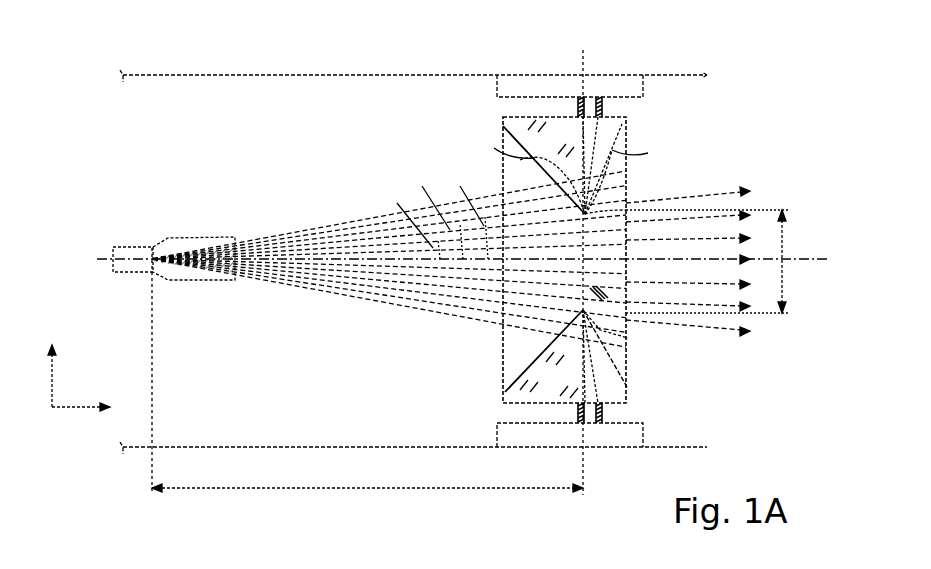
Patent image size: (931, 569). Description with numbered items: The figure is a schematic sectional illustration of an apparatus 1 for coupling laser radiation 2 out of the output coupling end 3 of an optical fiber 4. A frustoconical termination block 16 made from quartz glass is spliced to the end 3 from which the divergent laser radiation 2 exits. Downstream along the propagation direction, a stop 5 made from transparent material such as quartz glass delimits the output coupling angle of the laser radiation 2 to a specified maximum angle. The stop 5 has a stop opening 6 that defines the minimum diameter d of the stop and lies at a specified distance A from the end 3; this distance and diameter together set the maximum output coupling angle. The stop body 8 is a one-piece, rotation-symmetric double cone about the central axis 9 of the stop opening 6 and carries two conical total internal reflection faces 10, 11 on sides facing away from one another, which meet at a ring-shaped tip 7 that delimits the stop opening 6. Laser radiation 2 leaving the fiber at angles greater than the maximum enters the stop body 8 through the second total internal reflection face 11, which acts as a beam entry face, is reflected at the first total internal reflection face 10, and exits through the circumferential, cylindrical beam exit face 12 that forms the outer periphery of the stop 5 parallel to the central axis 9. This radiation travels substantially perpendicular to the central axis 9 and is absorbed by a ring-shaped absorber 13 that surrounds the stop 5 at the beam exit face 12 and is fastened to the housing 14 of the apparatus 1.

The apparatus 1 is at (656, 66).
The laser radiation 2 is at (337, 222).
The output coupling end 3 is at (163, 241).
The optical fiber 4 is at (137, 247).
The stop 5 is at (470, 394).
The stop opening 6 is at (600, 298).
The tip 7 is at (628, 206).
The stop body 8 is at (503, 372).
The central axis 9 is at (814, 262).
The first total internal reflection face 10 is at (612, 128).
The second total internal reflection face 11 is at (527, 128).
The beam exit face 12 is at (522, 405).
The absorber 13 is at (551, 94).
The housing 14 is at (280, 75).
The termination block 16 is at (186, 276).